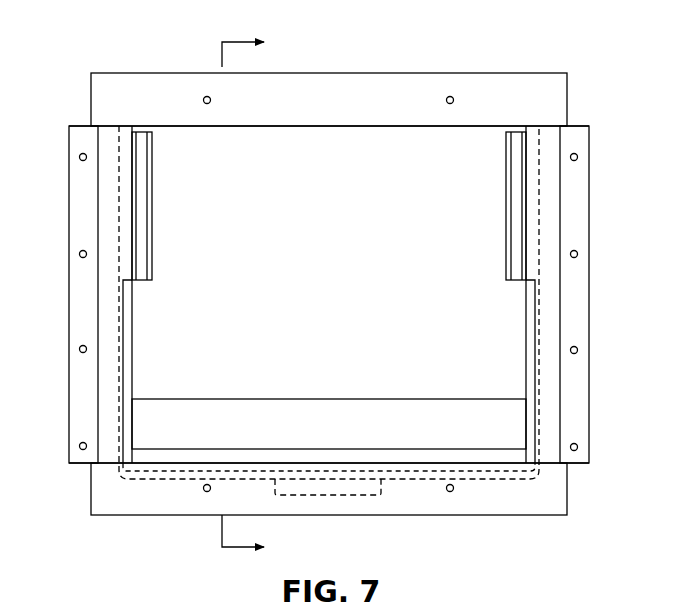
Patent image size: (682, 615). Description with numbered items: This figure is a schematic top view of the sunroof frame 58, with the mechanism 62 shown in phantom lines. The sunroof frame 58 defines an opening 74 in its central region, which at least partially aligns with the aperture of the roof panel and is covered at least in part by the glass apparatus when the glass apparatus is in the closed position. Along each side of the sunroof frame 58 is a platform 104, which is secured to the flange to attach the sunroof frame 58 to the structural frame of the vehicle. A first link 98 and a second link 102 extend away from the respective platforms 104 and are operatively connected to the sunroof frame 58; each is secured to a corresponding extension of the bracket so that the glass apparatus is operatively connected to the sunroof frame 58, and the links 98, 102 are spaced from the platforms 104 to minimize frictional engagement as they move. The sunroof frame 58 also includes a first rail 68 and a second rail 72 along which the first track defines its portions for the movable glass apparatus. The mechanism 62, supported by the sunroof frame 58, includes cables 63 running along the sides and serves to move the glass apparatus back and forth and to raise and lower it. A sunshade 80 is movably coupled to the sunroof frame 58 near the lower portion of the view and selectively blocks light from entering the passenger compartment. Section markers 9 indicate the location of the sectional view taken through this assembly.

The sunroof frame 58 is at (577, 58).
The section line 9- 9 is at (254, 295).
The opening 74 is at (337, 147).
The platform 104 is at (84, 283).
The first link 98 is at (137, 213).
The second link 102 is at (513, 213).
The first rail 68 is at (130, 360).
The second rail 72 is at (530, 363).
The cables 63 is at (137, 323).
The sunshade 80 is at (295, 410).
The mechanism 62 is at (328, 497).